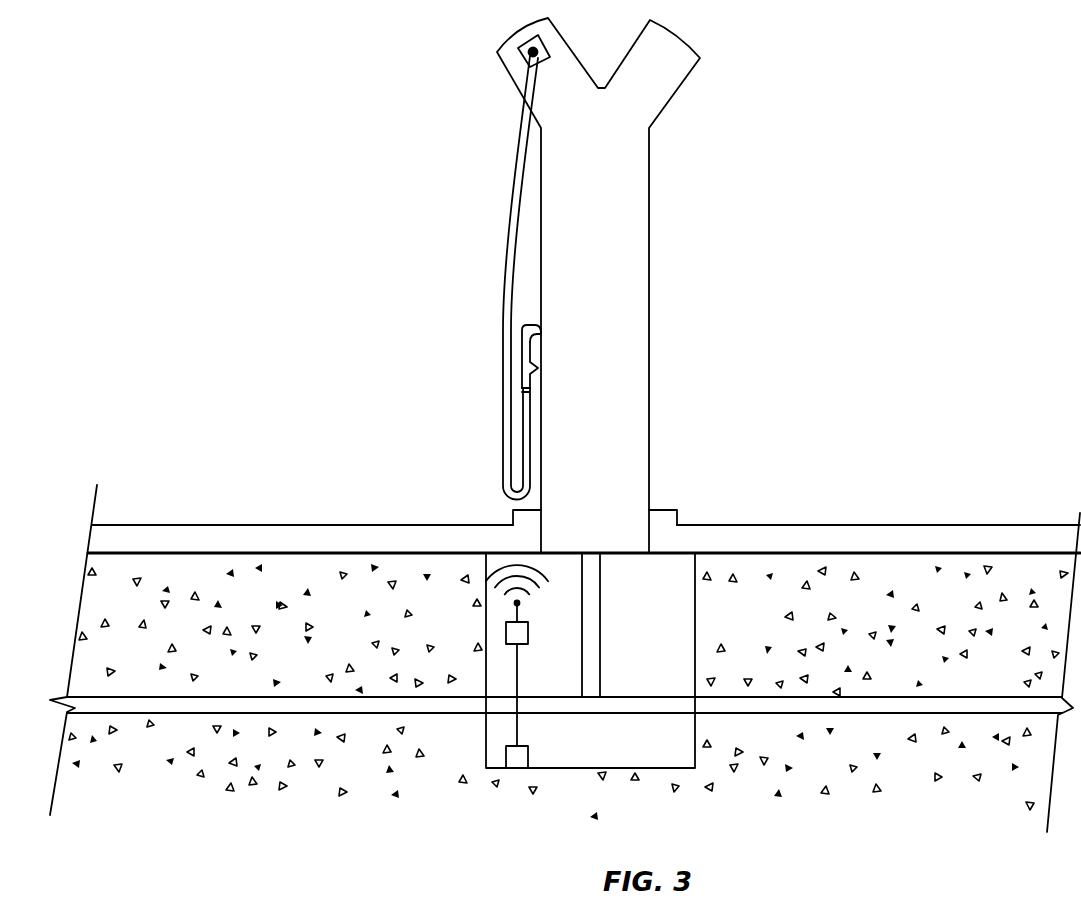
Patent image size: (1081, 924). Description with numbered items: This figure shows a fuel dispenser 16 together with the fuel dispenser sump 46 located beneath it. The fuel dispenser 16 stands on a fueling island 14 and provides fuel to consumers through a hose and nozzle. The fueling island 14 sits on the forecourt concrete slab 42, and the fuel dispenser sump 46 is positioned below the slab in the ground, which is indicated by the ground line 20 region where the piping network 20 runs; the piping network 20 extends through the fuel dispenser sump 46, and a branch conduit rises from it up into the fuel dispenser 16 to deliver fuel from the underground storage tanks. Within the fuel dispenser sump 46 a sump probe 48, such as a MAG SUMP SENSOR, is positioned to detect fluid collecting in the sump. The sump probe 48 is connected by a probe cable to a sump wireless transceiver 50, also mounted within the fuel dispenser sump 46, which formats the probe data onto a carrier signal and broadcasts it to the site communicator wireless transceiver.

The fuel dispenser 16 is at (650, 293).
The fueling island 14 is at (677, 510).
The forecourt concrete slab 42 is at (440, 525).
The piping network 20 is at (940, 694).
The fuel dispenser sump 46 is at (695, 638).
The sump wireless transceiver 50 is at (506, 627).
The sump probe 48 is at (506, 755).